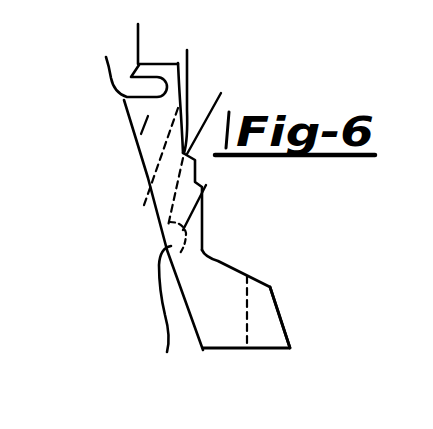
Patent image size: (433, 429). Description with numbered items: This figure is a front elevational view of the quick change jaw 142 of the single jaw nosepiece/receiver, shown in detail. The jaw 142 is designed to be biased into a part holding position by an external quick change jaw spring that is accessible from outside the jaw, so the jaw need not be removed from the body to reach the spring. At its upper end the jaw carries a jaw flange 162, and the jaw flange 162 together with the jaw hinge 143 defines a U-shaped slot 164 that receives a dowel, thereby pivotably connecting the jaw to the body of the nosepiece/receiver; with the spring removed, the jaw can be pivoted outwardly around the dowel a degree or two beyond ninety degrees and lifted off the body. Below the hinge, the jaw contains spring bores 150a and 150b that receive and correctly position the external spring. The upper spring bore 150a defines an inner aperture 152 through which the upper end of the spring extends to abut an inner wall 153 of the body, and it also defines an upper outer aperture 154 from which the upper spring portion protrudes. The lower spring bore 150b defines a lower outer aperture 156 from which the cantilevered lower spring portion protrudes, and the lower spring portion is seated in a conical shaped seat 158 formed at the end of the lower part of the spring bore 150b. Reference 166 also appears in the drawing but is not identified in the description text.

The jaw 142 is at (218, 333).
The jaw hinge 143 is at (137, 141).
The spring bore 150a is at (230, 109).
The spring bore 150b is at (206, 196).
The inner aperture 152 is at (196, 32).
The inner wall 153 is at (152, 177).
The upper outer aperture 154 is at (157, 190).
The lower outer aperture 156 is at (150, 318).
The conical shaped seat 158 is at (208, 233).
The jaw flange 162 is at (138, 24).
The U-shaped slot 164 is at (110, 70).
The side wall 166 is at (263, 320).